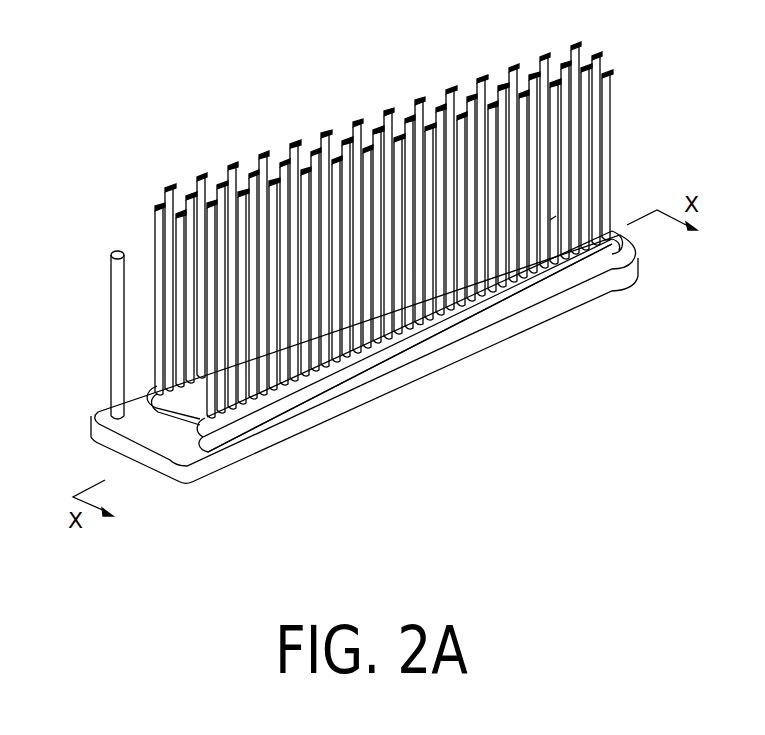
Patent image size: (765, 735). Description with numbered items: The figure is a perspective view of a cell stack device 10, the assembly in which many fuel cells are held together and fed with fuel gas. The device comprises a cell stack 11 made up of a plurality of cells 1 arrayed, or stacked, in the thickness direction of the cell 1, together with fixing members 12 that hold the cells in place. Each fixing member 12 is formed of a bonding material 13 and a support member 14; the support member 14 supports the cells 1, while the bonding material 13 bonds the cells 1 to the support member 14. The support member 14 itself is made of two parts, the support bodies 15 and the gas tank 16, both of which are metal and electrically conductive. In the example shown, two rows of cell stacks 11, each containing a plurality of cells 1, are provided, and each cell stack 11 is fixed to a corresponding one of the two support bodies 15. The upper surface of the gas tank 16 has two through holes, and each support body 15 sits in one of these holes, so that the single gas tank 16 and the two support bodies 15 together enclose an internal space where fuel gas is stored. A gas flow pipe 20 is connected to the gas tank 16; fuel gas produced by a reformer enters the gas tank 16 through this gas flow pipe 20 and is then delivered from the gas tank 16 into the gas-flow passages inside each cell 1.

The cell 1 is at (553, 218).
The cell stack device 10 is at (214, 72).
The cell stack 11 is at (540, 33).
The fixing member 12 is at (449, 485).
The bonding material 13 is at (300, 403).
The support member 14 is at (448, 441).
The support body 15 is at (333, 383).
The gas tank 16 is at (382, 385).
The gas flow pipe 20 is at (116, 270).